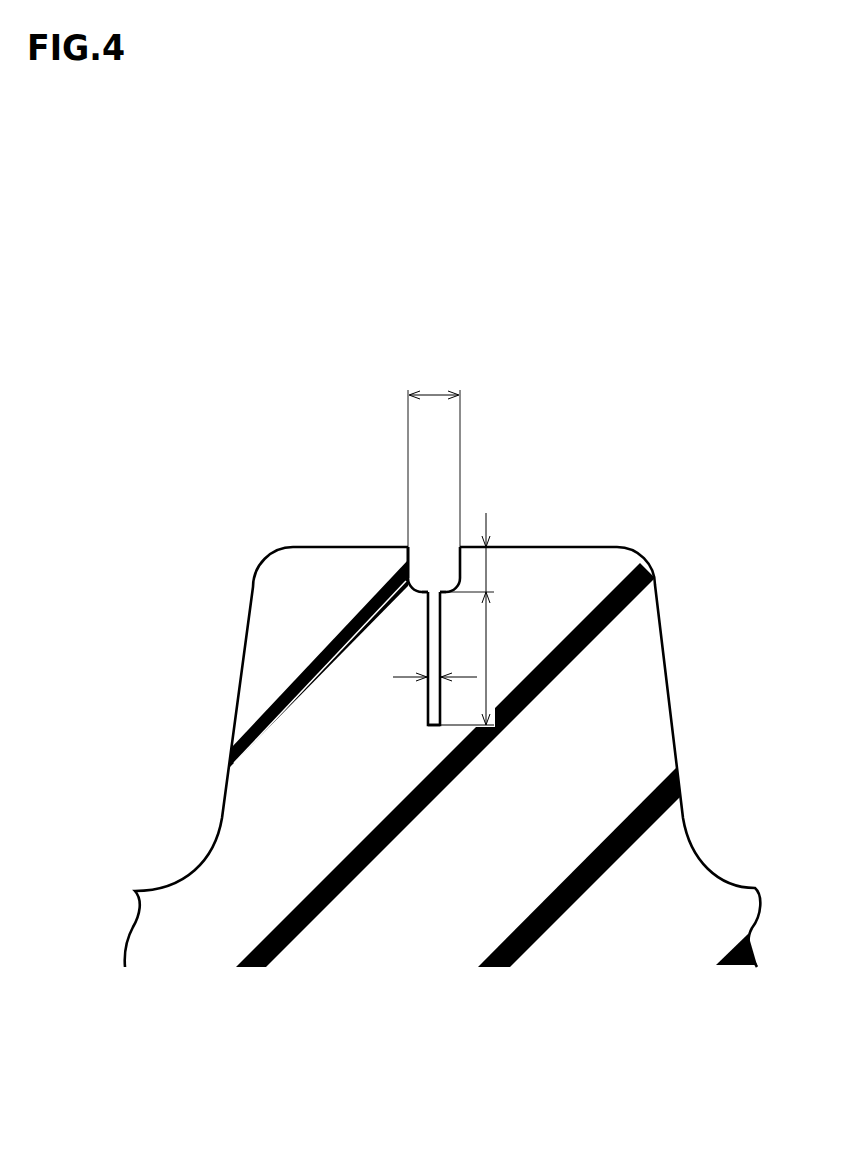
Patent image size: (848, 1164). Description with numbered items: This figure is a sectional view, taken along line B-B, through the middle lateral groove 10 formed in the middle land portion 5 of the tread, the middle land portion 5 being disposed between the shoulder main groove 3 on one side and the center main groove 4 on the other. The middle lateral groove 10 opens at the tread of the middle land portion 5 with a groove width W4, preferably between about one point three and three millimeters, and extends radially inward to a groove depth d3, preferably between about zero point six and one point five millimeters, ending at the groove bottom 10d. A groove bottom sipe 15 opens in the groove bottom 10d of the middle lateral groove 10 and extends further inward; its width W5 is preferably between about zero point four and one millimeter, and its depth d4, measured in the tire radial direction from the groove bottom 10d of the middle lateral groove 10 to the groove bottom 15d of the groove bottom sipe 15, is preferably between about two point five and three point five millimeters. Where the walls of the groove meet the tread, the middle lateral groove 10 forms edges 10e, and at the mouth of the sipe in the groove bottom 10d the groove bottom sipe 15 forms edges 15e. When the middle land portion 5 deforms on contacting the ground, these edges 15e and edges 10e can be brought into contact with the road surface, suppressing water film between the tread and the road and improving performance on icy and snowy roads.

The shoulder main groove 3 is at (200, 673).
The center main groove 4 is at (715, 627).
The middle land portion 5 is at (603, 547).
The middle lateral groove 10 is at (429, 562).
The groove bottom 10d is at (438, 582).
The edges 10e is at (407, 556).
The groove bottom sipe 15 is at (433, 630).
The groove bottom 15d is at (430, 718).
The edges 15e is at (405, 564).
The groove width W4 is at (434, 455).
The width W5 is at (433, 675).
The groove depth d3 is at (486, 570).
The depth d4 is at (487, 658).